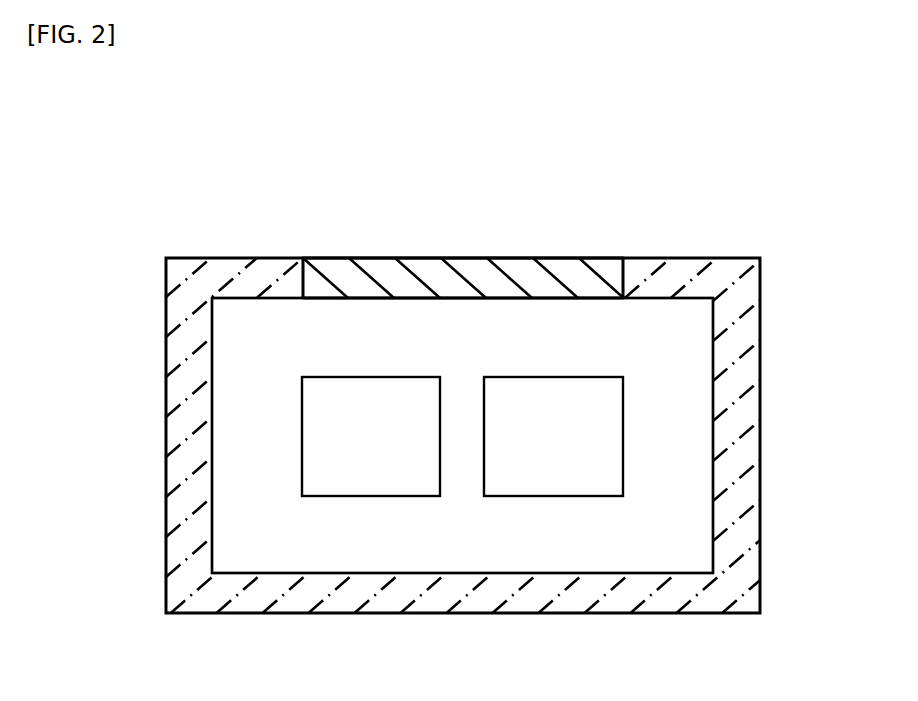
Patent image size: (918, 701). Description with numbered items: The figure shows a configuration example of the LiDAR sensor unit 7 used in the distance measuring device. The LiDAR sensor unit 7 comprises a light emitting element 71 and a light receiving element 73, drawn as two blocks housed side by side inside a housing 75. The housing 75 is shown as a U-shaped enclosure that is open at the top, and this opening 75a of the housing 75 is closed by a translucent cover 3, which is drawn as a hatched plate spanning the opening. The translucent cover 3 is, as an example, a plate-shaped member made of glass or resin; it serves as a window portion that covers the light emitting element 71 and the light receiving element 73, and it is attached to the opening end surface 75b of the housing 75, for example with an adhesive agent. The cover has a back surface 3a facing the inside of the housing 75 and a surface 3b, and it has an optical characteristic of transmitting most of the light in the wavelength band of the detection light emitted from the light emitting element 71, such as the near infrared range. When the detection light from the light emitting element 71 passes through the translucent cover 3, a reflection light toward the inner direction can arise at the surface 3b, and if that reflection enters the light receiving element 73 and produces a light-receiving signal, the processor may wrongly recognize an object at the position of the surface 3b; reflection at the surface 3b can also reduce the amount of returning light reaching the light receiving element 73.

The LiDAR sensor unit 7 is at (453, 206).
The housing 75 is at (410, 614).
The opening 75a is at (354, 318).
The opening end surface 75b is at (293, 273).
The translucent cover 3 is at (530, 278).
The back surface 3a is at (418, 298).
The surface 3b is at (418, 258).
The light emitting element 71 is at (371, 436).
The light receiving element 73 is at (553, 436).